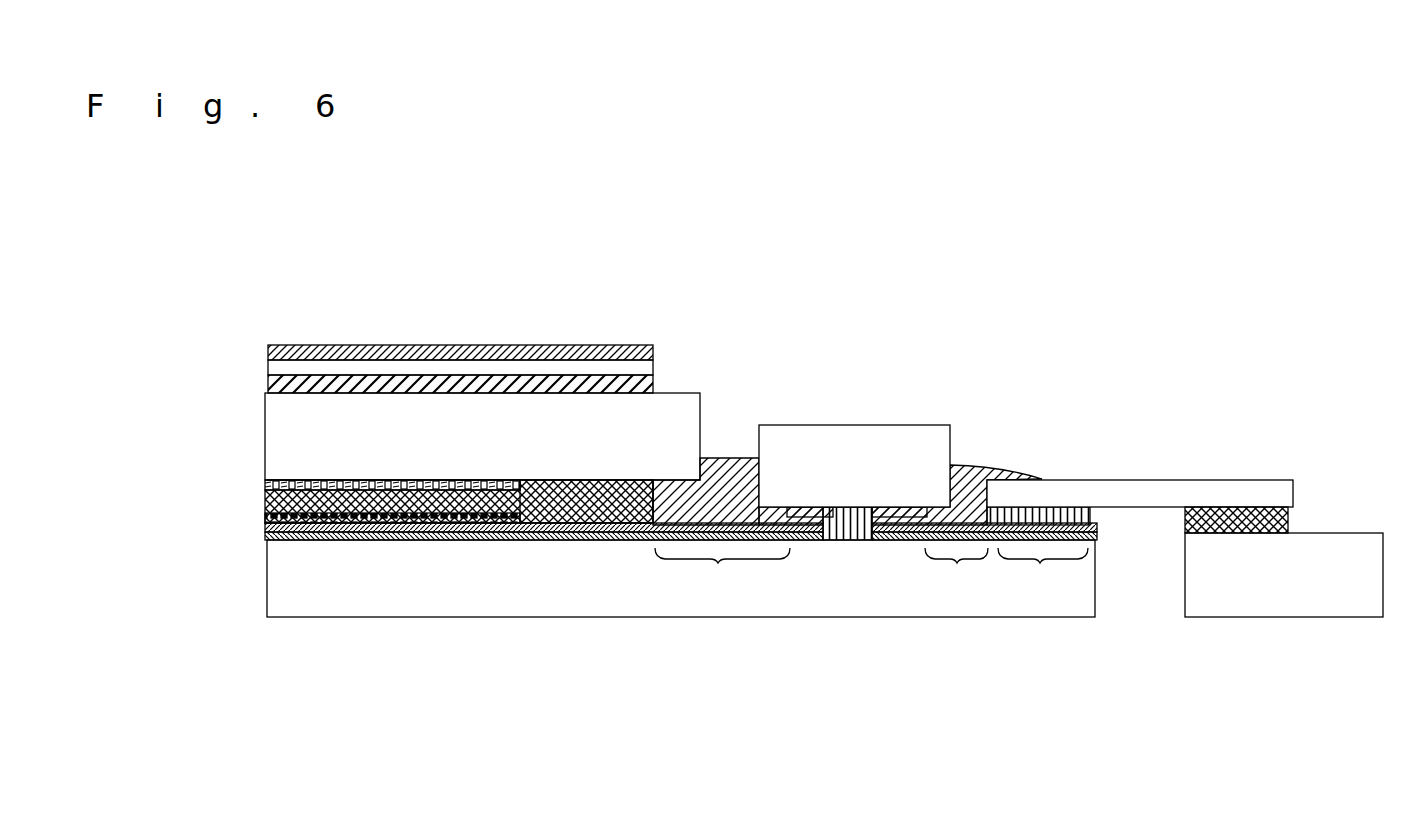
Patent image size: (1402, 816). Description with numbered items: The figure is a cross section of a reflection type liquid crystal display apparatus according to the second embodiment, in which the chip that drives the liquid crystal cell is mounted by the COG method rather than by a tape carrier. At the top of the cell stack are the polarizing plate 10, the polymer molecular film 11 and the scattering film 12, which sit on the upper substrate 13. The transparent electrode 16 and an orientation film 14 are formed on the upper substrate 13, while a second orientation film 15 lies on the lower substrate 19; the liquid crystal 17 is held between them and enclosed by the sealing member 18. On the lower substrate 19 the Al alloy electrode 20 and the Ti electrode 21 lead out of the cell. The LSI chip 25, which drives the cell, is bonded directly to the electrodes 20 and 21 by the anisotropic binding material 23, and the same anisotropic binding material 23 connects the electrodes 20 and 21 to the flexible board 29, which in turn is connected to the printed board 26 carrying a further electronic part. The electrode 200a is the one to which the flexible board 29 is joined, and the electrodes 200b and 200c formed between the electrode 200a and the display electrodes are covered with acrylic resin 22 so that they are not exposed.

The polarizing plate 10 is at (345, 347).
The polymer molecular film 11 is at (435, 367).
The scattering film 12 is at (515, 385).
The upper substrate 13 is at (293, 422).
The orientation film 14 is at (373, 477).
The orientation film 15 is at (267, 539).
The transparent electrode 16 is at (287, 475).
The liquid crystal 17 is at (270, 502).
The sealing member 18 is at (575, 505).
The lower substrate 19 is at (693, 595).
The Al alloy electrode 20 is at (340, 535).
The Ti electrode 21 is at (407, 537).
The acrylic resin 22 is at (722, 463).
The anisotropic binding material 23 is at (1022, 540).
The LSI chip 25 is at (868, 437).
The printed board 26 is at (1280, 575).
The flexible board 29 is at (1140, 490).
The electrode 200a is at (1040, 558).
The electrode 200b is at (718, 562).
The electrode 200c is at (960, 560).